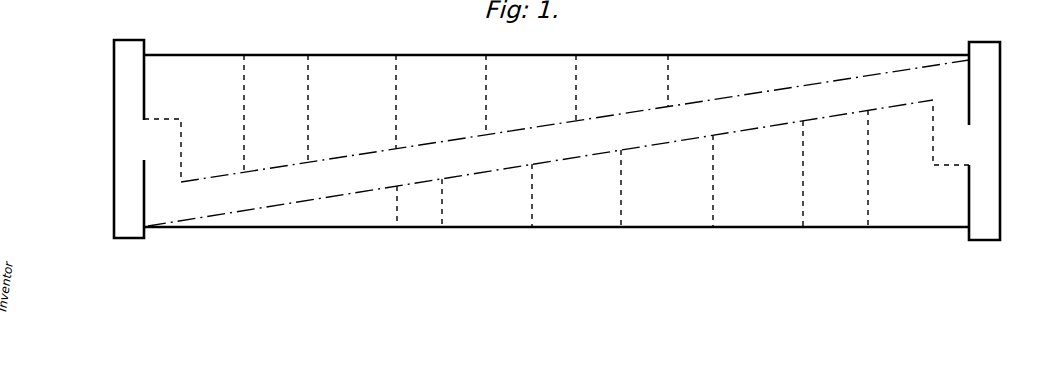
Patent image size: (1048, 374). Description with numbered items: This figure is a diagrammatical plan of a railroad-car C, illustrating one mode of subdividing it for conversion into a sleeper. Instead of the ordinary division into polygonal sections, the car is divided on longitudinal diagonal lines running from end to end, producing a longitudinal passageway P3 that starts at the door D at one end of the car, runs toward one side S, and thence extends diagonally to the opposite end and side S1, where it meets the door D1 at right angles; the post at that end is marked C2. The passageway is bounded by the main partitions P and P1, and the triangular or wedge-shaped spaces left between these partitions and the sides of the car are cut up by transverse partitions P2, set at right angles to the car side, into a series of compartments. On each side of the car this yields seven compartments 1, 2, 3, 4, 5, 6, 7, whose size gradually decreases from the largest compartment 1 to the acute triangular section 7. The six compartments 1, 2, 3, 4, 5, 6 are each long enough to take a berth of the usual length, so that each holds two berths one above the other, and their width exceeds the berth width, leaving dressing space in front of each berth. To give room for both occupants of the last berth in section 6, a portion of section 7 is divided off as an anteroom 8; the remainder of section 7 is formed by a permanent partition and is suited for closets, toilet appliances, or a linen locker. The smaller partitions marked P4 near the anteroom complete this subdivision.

The car C is at (496, 141).
The opposite end post C2 is at (1003, 141).
The door D is at (155, 150).
The door D1 is at (951, 133).
The side S is at (540, 175).
The side S1 is at (575, 108).
The compartment 7 is at (557, 143).
The compartment 1 is at (551, 124).
The compartment 2 is at (567, 168).
The compartment 3 is at (574, 141).
The compartment 4 is at (571, 141).
The compartment 5 is at (571, 141).
The compartment 6 is at (575, 141).
The anteroom 8 is at (551, 150).
The main partition P is at (583, 111).
The main partition P1 is at (755, 141).
The transverse partition P2 is at (513, 129).
The longitudinal passageway P3 is at (485, 154).
The partition panel P4 is at (548, 148).